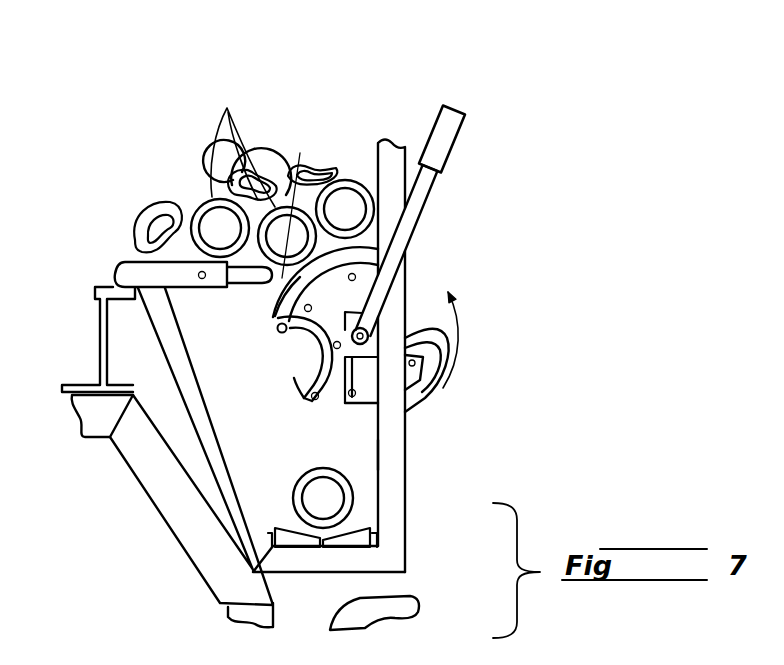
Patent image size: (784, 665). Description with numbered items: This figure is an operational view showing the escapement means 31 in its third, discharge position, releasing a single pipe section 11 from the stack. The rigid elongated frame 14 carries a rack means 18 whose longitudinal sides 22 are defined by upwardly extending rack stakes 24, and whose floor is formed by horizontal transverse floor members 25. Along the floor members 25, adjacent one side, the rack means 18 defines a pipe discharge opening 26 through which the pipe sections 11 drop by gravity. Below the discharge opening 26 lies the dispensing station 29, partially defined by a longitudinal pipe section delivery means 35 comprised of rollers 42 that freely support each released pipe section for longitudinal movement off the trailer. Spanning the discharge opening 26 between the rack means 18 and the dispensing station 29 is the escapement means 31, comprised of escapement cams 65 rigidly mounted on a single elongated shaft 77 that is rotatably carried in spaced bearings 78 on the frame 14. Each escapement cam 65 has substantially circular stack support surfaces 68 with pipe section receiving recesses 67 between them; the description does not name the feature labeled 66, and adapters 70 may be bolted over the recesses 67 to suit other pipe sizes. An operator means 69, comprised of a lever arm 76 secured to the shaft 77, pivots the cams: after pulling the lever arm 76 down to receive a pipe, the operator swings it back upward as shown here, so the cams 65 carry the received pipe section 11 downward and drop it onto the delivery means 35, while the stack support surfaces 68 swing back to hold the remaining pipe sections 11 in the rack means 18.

The pipe sections 11 is at (306, 480).
The elongated frame 14 is at (97, 330).
The rack means 18 is at (410, 548).
The longitudinal sides 22 is at (376, 138).
The rack stakes 24 is at (388, 468).
The floor members 25 is at (118, 266).
The pipe discharge opening 26 is at (301, 199).
The dispensing station 29 is at (366, 461).
The escapement means 31 is at (270, 298).
The pipe section delivery means 35 is at (370, 513).
The rollers 42 is at (358, 543).
The escapement cams 65 is at (348, 431).
The arcuate surface 66 is at (287, 302).
The pipe section receiving recess 67 is at (310, 385).
The stack support surface 68 is at (370, 233).
The operator means 69 is at (460, 143).
The adapters 70 is at (277, 333).
The lever arm 76 is at (422, 190).
The shaft 77 is at (332, 360).
The bearings 78 is at (338, 357).